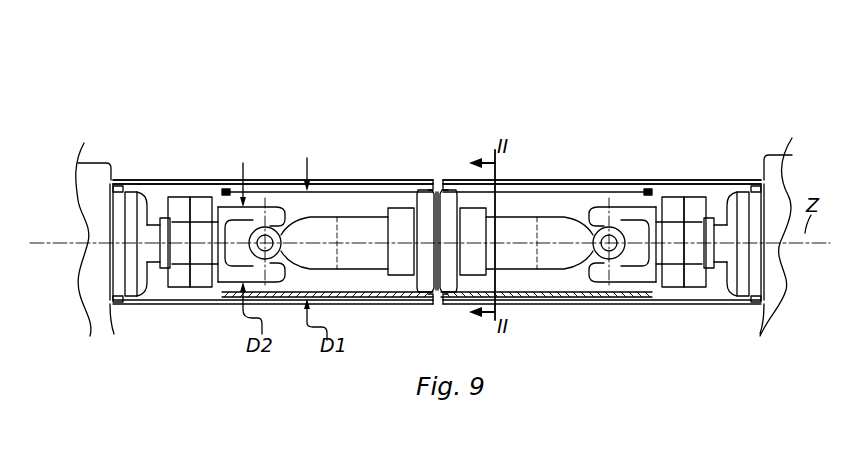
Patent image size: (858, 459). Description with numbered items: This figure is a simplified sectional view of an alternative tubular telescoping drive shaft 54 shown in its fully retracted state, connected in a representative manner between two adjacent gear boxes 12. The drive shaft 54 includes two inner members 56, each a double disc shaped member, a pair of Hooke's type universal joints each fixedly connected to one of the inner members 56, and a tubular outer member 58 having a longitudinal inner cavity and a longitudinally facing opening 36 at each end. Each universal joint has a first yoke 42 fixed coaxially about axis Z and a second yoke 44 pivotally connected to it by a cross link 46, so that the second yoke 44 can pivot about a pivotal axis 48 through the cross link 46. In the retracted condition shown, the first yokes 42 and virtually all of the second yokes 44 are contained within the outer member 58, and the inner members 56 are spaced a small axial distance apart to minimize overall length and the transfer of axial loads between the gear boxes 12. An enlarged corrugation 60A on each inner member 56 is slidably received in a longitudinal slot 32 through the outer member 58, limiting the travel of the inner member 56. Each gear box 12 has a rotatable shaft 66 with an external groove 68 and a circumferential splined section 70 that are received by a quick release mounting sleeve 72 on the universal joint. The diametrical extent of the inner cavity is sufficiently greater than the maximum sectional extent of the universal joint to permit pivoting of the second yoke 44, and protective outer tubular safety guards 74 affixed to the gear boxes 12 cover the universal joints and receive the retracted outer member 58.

The gear box 12 is at (95, 160).
The slot 32 is at (290, 181).
The opening 36 is at (222, 290).
The first yoke 42 is at (329, 216).
The second yoke 44 is at (282, 212).
The cross link 46 is at (291, 262).
The pivotal axis 48 is at (632, 280).
The tubular telescoping drive shaft 54 is at (789, 90).
The inner member 56 is at (427, 298).
The outer member 58 is at (590, 298).
The corrugation 60A is at (413, 181).
The rotatable shaft 66 is at (148, 212).
The external groove 68 is at (188, 218).
The circumferential splined section 70 is at (183, 303).
The quick release mounting sleeve 72 is at (208, 200).
The protective outer tubular safety guard 74 is at (137, 303).